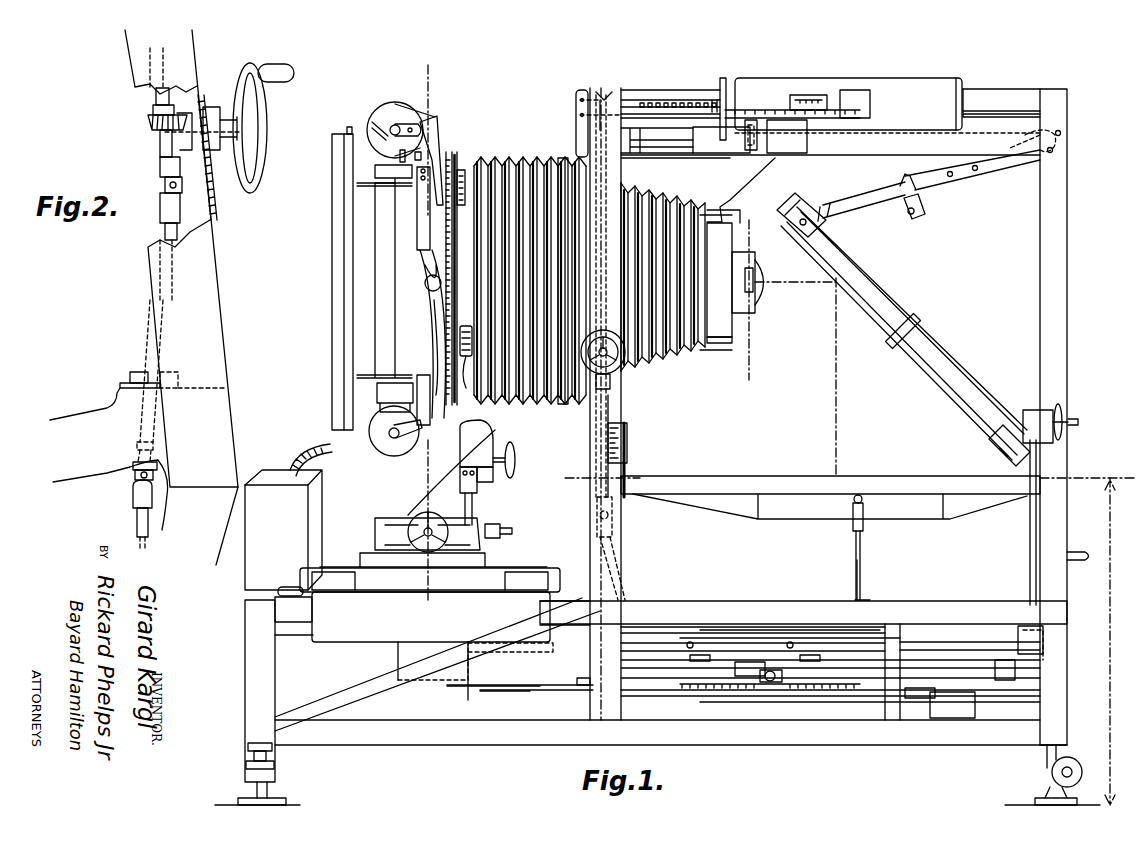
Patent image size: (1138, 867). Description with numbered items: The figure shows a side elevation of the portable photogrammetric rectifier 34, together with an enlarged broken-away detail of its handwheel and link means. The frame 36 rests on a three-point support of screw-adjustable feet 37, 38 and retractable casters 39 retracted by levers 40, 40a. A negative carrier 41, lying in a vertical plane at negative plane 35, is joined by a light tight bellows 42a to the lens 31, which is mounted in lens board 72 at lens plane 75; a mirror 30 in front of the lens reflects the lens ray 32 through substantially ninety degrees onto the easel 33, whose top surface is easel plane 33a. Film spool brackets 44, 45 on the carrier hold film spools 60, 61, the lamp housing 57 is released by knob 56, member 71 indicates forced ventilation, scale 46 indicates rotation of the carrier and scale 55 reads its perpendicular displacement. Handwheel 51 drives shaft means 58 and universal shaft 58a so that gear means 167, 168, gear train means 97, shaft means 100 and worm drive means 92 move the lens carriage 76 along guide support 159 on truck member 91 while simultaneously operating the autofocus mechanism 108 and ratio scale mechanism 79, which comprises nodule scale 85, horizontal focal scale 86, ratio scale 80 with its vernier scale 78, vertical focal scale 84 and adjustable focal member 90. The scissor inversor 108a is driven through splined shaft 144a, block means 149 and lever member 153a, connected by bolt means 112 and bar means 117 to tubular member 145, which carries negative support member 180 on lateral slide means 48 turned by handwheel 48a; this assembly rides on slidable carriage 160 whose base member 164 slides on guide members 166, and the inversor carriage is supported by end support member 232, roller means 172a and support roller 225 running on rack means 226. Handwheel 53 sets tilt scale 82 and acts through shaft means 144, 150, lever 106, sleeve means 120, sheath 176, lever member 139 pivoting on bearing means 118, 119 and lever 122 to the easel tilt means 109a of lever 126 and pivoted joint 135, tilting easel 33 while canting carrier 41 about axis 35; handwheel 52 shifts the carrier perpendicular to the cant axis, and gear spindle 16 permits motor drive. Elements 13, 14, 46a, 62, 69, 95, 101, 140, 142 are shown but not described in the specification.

In FIG. 1, the rear standard bracket 13 is at (736, 199).
In FIG. 1, the lens mount 14 is at (747, 256).
In FIG. 2, the gear spindle 16 is at (214, 122).
In FIG. 1, the mirror 30 is at (885, 309).
In FIG. 1, the lens 31 is at (757, 280).
In FIG. 1, the lens ray 32 is at (839, 416).
In FIG. 1, the easel 33 is at (864, 477).
In FIG. 1, the easel plane 33a is at (804, 471).
In FIG. 1, the rectifier 34 is at (1077, 299).
In FIG. 1, the negative plane 35 is at (430, 86).
In FIG. 2, the frame 36 is at (195, 320).
In FIG. 1, the frame 36 is at (1050, 230).
In FIG. 1, the foot 37 is at (274, 800).
In FIG. 1, the foot 38 is at (1045, 799).
In FIG. 1, the retractable casters 39 is at (1052, 770).
In FIG. 1, the lever 40 is at (1078, 553).
In FIG. 1, the lever 40a is at (278, 593).
In FIG. 1, the negative carrier 41 is at (452, 147).
In FIG. 1, the light tight bellows 42a is at (543, 399).
In FIG. 1, the film spool bracket 44 is at (404, 118).
In FIG. 1, the film spool bracket 45 is at (407, 465).
In FIG. 1, the scale 46 is at (443, 321).
In FIG. 1, the indicator 46a is at (465, 190).
In FIG. 1, the lateral slide means 48 is at (361, 541).
In FIG. 1, the handwheel 48a is at (482, 542).
In FIG. 2, the handwheel 51 is at (252, 118).
In FIG. 1, the handwheel 51 is at (614, 370).
In FIG. 1, the handwheel 52 is at (517, 458).
In FIG. 1, the handwheel 53 is at (1074, 431).
In FIG. 1, the scale 55 is at (468, 390).
In FIG. 1, the knob 56 is at (425, 284).
In FIG. 1, the lamp housing 57 is at (334, 356).
In FIG. 2, the shaft means 58 is at (155, 360).
In FIG. 1, the shaft means 58 is at (612, 415).
In FIG. 2, the shaft means 58a is at (157, 98).
In FIG. 1, the shaft means 58a is at (608, 167).
In FIG. 1, the film spool 60 is at (373, 118).
In FIG. 1, the film spool 61 is at (380, 449).
In FIG. 1, the cable bracket 62 is at (390, 137).
In FIG. 1, the link arm 69 is at (920, 208).
In FIG. 1, the member 71 is at (323, 515).
In FIG. 1, the lens board 72 is at (736, 338).
In FIG. 1, the lens plane 75 is at (742, 350).
In FIG. 1, the lens carriage means 76 is at (714, 166).
In FIG. 1, the ratio vernier scale 78 is at (783, 153).
In FIG. 1, the ratio scale mechanism 79 is at (738, 90).
In FIG. 1, the ratio scale 80 is at (872, 109).
In FIG. 1, the tilt scale 82 is at (624, 441).
In FIG. 1, the vertical focal scale 84 is at (755, 116).
In FIG. 1, the nodule scale 85 is at (829, 96).
In FIG. 1, the horizontal focal scale 86 is at (797, 96).
In FIG. 1, the adjustable pivotal focal member 90 is at (750, 138).
In FIG. 1, the lens truck assembly member 91 is at (908, 74).
In FIG. 1, the worm drive means 92 is at (678, 141).
In FIG. 1, the cylinder 95 is at (865, 195).
In FIG. 1, the gear train means 97 is at (576, 103).
In FIG. 1, the shaft means 100 is at (651, 95).
In FIG. 1, the stop 101 is at (714, 95).
In FIG. 1, the lever 106 is at (483, 615).
In FIG. 1, the autofocus mechanism 108 is at (838, 708).
In FIG. 1, the inversor subassembly 108a is at (694, 706).
In FIG. 1, the easel tilt means 109a is at (876, 551).
In FIG. 1, the bolt means 112 is at (516, 692).
In FIG. 1, the bar means 117 is at (465, 696).
In FIG. 1, the bearing means 118 is at (1033, 690).
In FIG. 1, the bearing means 119 is at (1003, 682).
In FIG. 1, the sleeve means 120 is at (563, 607).
In FIG. 1, the lever 122 is at (981, 645).
In FIG. 1, the lever 126 is at (864, 590).
In FIG. 1, the pivoted joint 135 is at (856, 505).
In FIG. 1, the lever member 139 is at (961, 702).
In FIG. 1, the section line 140 is at (1064, 473).
In FIG. 1, the pointer 142 is at (617, 476).
In FIG. 1, the shaft means 144 is at (933, 642).
In FIG. 1, the splined shaft 144a is at (733, 692).
In FIG. 1, the tubular member 145 is at (398, 662).
In FIG. 1, the block means 149 is at (598, 676).
In FIG. 1, the shaft means 150 is at (1035, 520).
In FIG. 1, the lever member 153a is at (560, 691).
In FIG. 1, the guide support means 159 is at (991, 106).
In FIG. 1, the slidable carriage means 160 is at (298, 622).
In FIG. 1, the base member 164 is at (447, 592).
In FIG. 1, the guide members 166 is at (297, 643).
In FIG. 1, the gear means 167 is at (576, 113).
In FIG. 1, the gear means 168 is at (605, 96).
In FIG. 1, the roller means 172a is at (671, 625).
In FIG. 1, the sheath lever means 176 is at (896, 662).
In FIG. 1, the negative support member 180 is at (480, 504).
In FIG. 1, the support roller means 225 is at (708, 638).
In FIG. 1, the rack means 226 is at (858, 692).
In FIG. 1, the end support member 232 is at (755, 628).